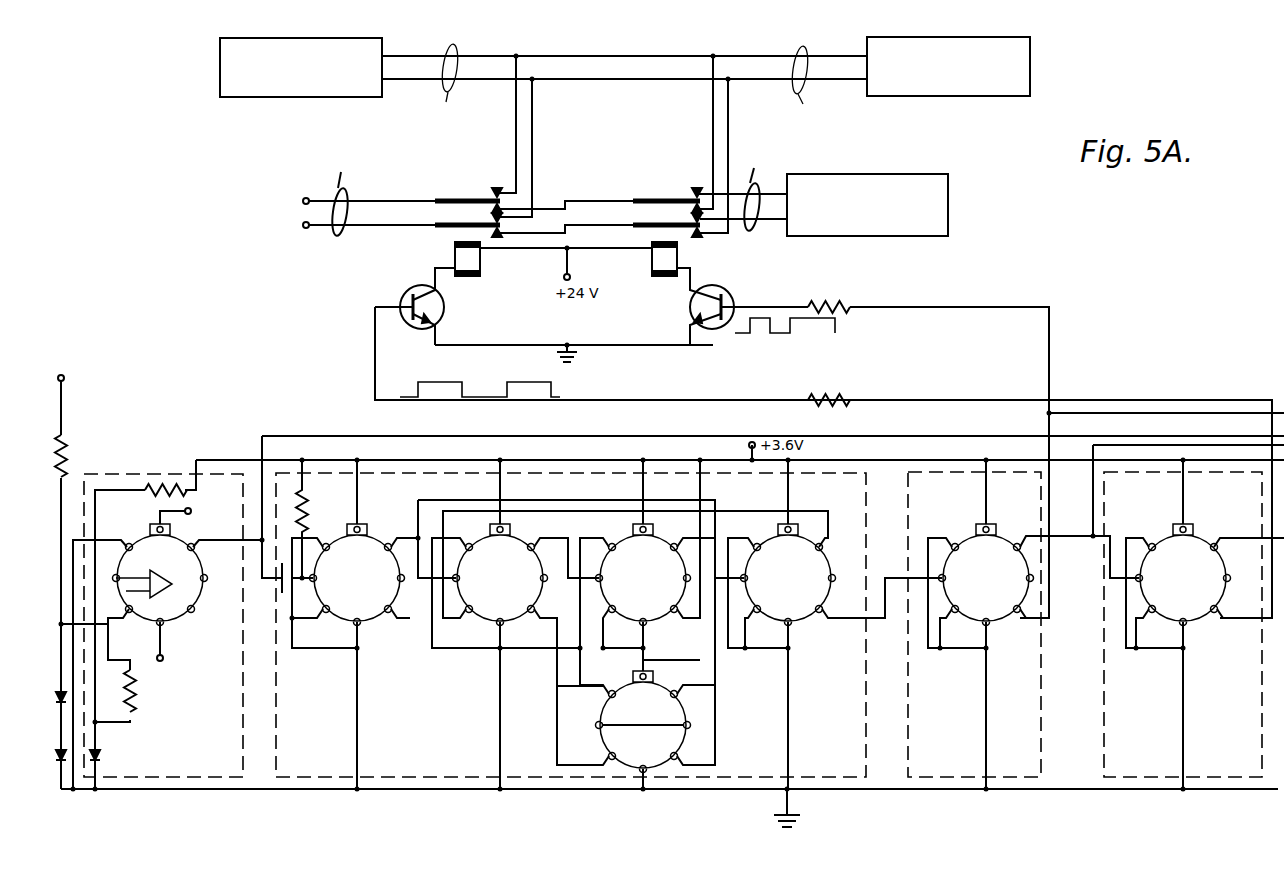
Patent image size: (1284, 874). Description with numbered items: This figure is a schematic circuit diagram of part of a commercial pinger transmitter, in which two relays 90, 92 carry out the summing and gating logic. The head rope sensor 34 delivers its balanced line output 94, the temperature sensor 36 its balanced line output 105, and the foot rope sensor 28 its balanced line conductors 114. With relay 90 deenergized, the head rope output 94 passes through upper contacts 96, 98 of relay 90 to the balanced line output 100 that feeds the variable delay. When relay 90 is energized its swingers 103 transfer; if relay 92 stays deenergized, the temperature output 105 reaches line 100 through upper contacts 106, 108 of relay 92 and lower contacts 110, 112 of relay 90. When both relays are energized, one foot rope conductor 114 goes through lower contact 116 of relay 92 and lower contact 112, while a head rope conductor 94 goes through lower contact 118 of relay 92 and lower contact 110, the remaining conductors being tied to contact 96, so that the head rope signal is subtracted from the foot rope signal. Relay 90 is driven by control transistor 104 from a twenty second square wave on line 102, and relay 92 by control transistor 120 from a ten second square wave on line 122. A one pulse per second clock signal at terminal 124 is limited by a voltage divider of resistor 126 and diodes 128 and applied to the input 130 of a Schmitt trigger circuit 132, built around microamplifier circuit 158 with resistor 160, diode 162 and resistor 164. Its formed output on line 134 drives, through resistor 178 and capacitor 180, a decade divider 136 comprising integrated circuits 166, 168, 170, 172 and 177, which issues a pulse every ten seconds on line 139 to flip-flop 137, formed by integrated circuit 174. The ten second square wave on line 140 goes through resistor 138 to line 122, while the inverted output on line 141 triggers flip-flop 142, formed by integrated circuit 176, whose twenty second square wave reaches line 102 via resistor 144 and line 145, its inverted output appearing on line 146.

The foot rope sensor 28 is at (1031, 62).
The head rope sensor 34 is at (383, 38).
The temperature sensor 36 is at (949, 192).
The relay 90 is at (468, 209).
The relay 92 is at (695, 202).
The balanced line output 94 is at (449, 85).
The upper contact 96 is at (500, 182).
The upper contact 98 is at (565, 201).
The balanced line output 100 is at (369, 191).
The line 102 is at (374, 398).
The swingers 103 is at (462, 196).
The control transistor 104 is at (445, 312).
The balanced line output 105 is at (736, 187).
The upper contact 106 is at (688, 180).
The upper contact 108 is at (690, 222).
The lower contact 110 is at (518, 205).
The lower contact 112 is at (508, 240).
The balanced line conductors 114 is at (815, 81).
The lower contact 116 is at (692, 293).
The lower contact 118 is at (688, 205).
The control transistor 120 is at (790, 292).
The line 122 is at (842, 290).
The terminal 124 is at (63, 382).
The resistor 126 is at (70, 455).
The diodes 128 is at (68, 697).
The input 130 is at (80, 624).
The Schmitt trigger circuit 132 is at (120, 474).
The line 134 is at (946, 436).
The decade divider 136 is at (276, 770).
The flip-flop 137 is at (1041, 698).
The resistor 138 is at (858, 305).
The line 139 is at (885, 640).
The line 140 is at (1262, 412).
The line 141 is at (1258, 445).
The flip-flop 142 is at (1104, 765).
The resistor 144 is at (858, 400).
The line 145 is at (960, 400).
The line 146 is at (1256, 537).
The circuit 158 is at (185, 612).
The resistor 160 is at (165, 486).
The diode 162 is at (100, 755).
The resistor 164 is at (138, 700).
The integrated circuit 166 is at (378, 618).
The integrated circuit 168 is at (520, 618).
The integrated circuit 170 is at (665, 618).
The integrated circuit 172 is at (805, 620).
The integrated circuit 174 is at (1005, 618).
The integrated circuit 176 is at (1205, 618).
The integrated circuit 177 is at (688, 715).
The resistor 178 is at (310, 505).
The capacitor 180 is at (288, 600).